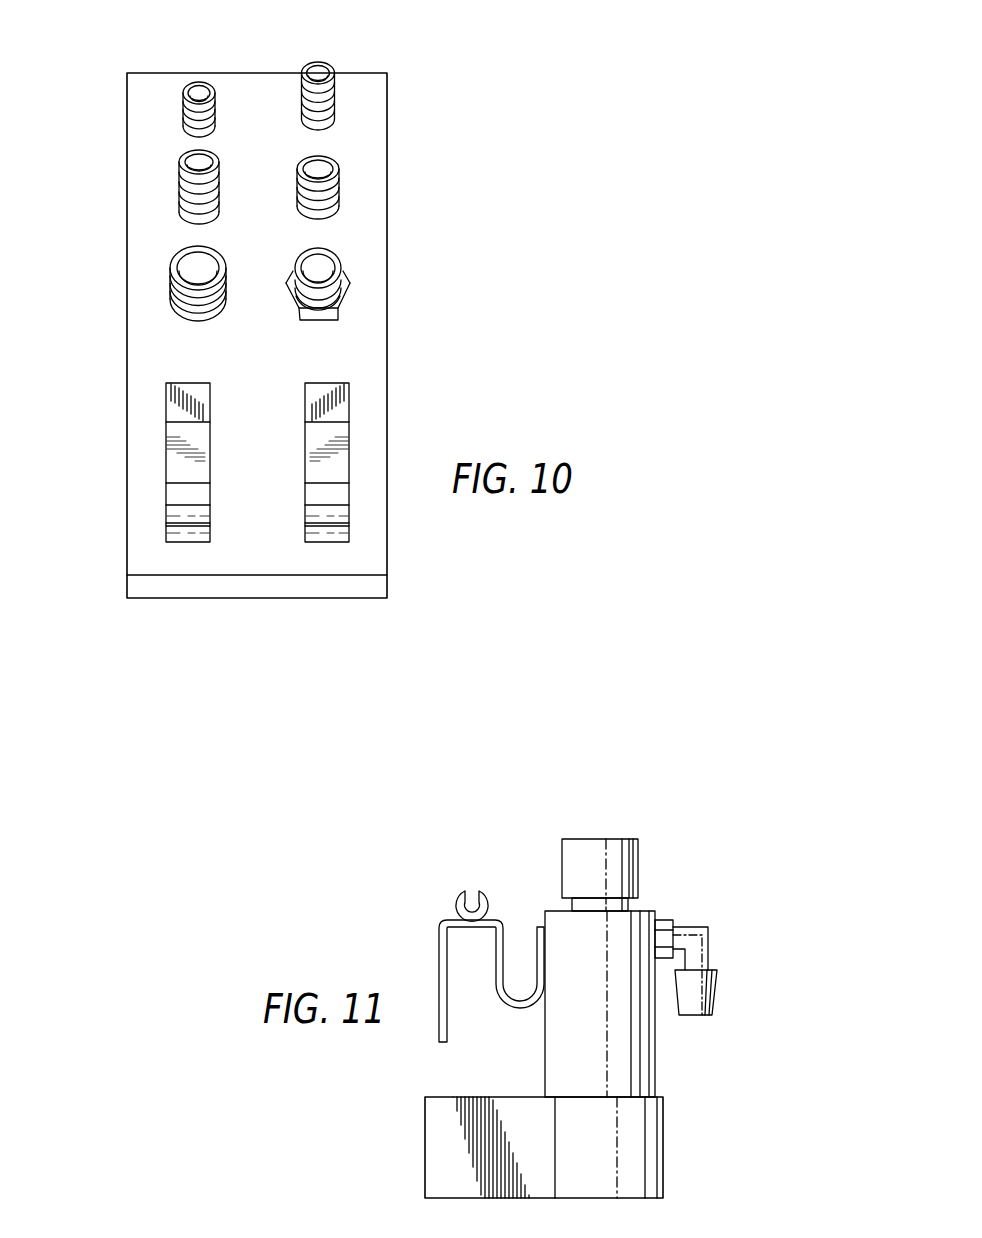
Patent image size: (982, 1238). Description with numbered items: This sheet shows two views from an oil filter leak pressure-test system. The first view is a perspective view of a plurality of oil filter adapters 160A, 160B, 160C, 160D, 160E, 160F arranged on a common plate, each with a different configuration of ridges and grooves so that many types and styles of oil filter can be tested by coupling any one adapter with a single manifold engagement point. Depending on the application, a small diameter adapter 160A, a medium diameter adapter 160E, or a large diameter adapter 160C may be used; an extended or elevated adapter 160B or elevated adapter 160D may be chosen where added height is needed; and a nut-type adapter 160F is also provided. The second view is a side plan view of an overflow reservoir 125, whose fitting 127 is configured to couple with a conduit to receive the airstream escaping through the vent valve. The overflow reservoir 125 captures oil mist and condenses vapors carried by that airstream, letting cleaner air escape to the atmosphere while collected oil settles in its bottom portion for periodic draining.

In FIG. 10, the small diameter adapter 160A is at (192, 80).
In FIG. 10, the elevated adapter 160B is at (180, 160).
In FIG. 10, the large diameter adapter 160C is at (171, 266).
In FIG. 10, the elevated adapter 160D is at (320, 62).
In FIG. 10, the medium diameter adapter 160E is at (337, 166).
In FIG. 10, the nut-type adapter 160F is at (345, 282).
In FIG. 11, the overflow reservoir 125 is at (563, 930).
In FIG. 11, the fitting 127 is at (708, 947).